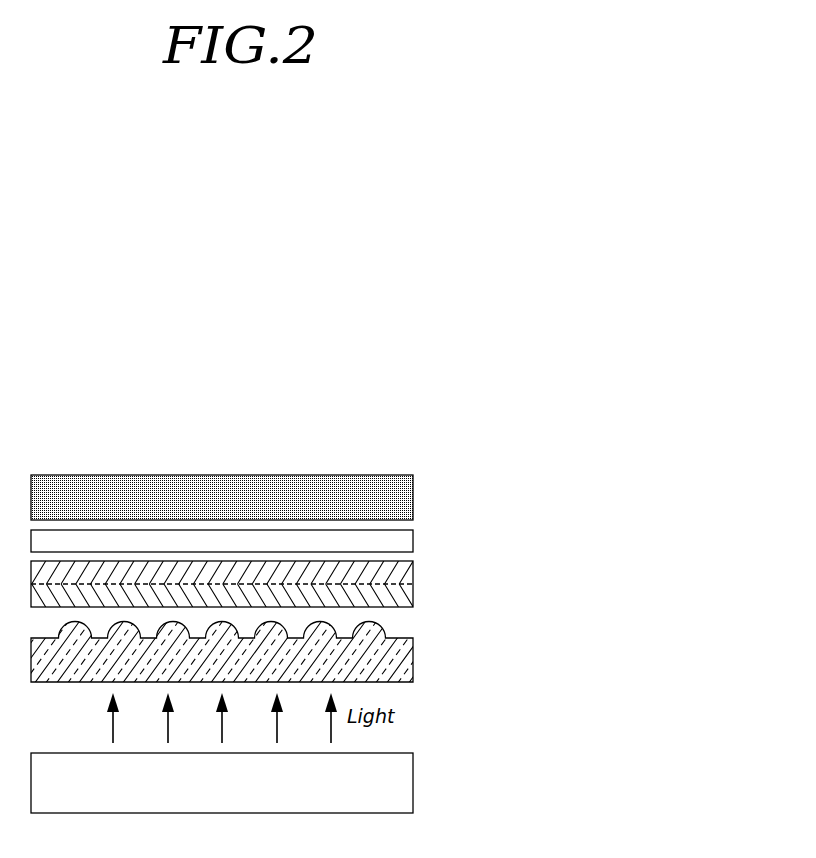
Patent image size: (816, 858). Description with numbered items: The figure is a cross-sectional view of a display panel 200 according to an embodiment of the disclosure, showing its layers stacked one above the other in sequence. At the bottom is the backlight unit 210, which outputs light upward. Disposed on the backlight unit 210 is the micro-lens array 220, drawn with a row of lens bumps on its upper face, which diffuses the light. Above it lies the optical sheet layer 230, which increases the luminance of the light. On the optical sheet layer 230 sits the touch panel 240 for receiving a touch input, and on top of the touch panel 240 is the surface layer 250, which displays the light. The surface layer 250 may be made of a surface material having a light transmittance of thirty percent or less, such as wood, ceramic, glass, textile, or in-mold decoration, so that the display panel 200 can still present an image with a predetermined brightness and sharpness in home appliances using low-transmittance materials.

The display panel 200 is at (362, 458).
The backlight unit 210 is at (403, 783).
The micro-lens array 220 is at (405, 661).
The optical sheet layer 230 is at (405, 577).
The touch panel 240 is at (404, 540).
The surface layer 250 is at (405, 497).